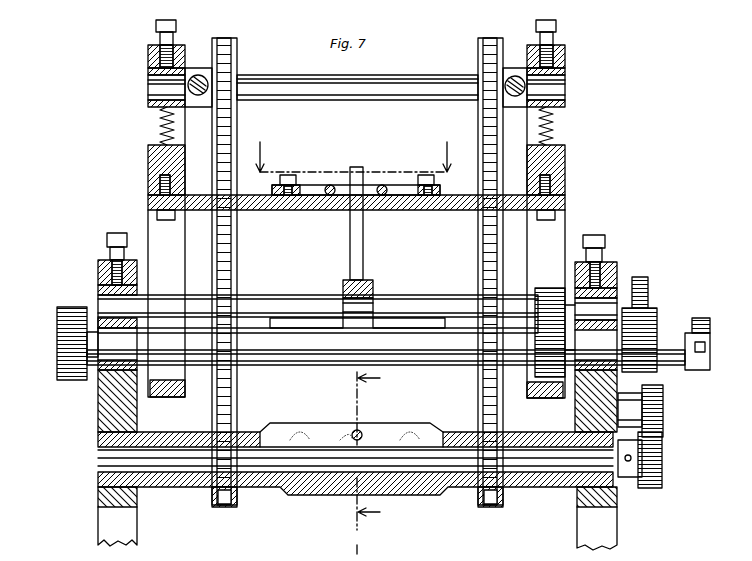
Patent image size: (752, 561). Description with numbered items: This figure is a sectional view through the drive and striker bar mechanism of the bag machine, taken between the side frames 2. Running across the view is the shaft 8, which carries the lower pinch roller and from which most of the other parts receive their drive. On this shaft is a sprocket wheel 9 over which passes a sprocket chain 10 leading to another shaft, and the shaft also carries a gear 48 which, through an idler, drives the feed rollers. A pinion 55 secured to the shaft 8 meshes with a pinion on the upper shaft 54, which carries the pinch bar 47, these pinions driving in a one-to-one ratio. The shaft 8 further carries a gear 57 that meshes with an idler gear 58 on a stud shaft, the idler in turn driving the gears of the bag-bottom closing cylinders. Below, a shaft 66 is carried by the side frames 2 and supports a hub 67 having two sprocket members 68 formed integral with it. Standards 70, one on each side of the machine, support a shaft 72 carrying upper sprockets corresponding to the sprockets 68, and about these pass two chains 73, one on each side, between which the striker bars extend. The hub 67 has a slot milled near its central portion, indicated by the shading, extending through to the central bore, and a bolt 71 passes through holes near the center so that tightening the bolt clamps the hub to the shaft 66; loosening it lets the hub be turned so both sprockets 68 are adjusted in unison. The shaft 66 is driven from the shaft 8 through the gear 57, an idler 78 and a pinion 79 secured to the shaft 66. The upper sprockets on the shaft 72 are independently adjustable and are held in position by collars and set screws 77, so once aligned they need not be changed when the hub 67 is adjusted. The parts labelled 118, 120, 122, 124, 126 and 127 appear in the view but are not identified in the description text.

The side frame 2 is at (98, 522).
The shaft 8 is at (88, 366).
The sprocket wheel 9 is at (726, 344).
The sprocket chain 10 is at (728, 302).
The pinch bar 47 is at (305, 318).
The gear 48 is at (70, 310).
The upper shaft 54 is at (98, 300).
The pinion 55 is at (548, 400).
The gear 57 is at (645, 318).
The idler gear 58 is at (548, 288).
The shaft 66 is at (98, 462).
The hub 67 is at (318, 495).
The sprocket member 68 is at (240, 412).
The standard 70 is at (148, 162).
The bolt 71 is at (360, 430).
The shaft 72 is at (406, 75).
The chain 73 is at (237, 274).
The set screw 77 is at (198, 75).
The idler 78 is at (663, 410).
The pinion 79 is at (662, 462).
The cross plate 118 is at (148, 205).
The bolt 120 is at (160, 182).
The mounting bar 122 is at (347, 176).
The vertical arm 124 is at (363, 237).
The slide block 126 is at (343, 283).
The pin 127 is at (330, 185).